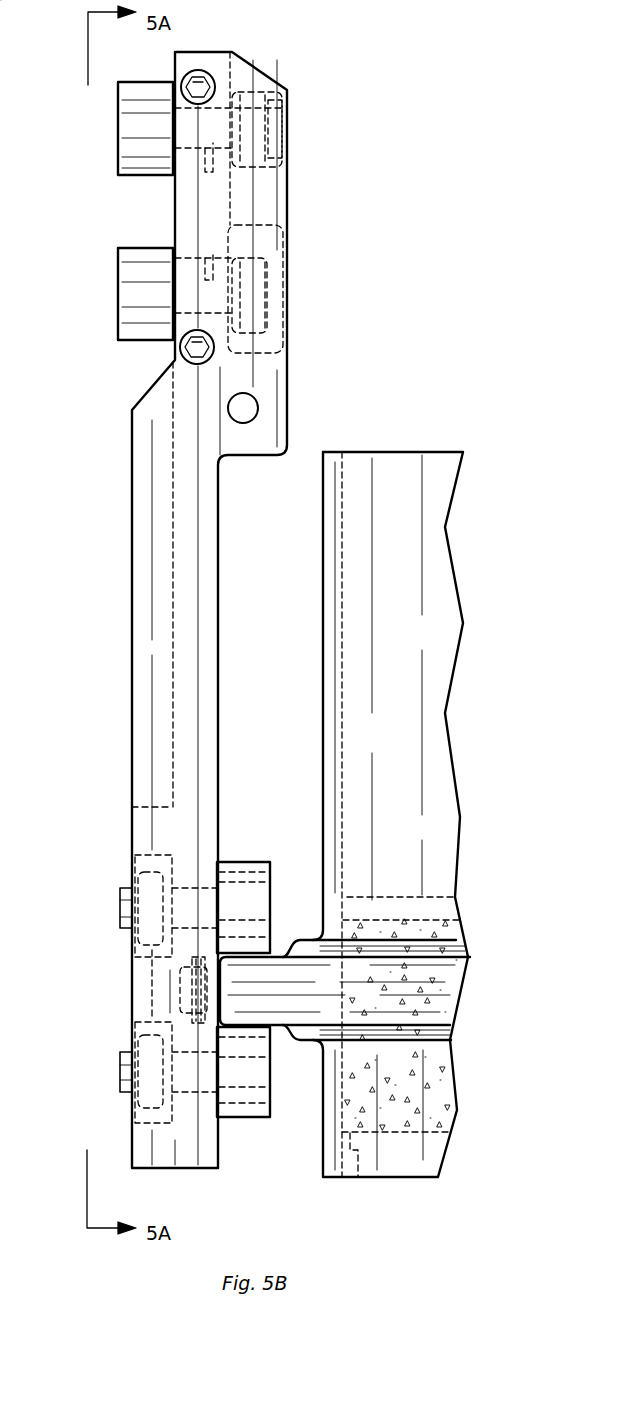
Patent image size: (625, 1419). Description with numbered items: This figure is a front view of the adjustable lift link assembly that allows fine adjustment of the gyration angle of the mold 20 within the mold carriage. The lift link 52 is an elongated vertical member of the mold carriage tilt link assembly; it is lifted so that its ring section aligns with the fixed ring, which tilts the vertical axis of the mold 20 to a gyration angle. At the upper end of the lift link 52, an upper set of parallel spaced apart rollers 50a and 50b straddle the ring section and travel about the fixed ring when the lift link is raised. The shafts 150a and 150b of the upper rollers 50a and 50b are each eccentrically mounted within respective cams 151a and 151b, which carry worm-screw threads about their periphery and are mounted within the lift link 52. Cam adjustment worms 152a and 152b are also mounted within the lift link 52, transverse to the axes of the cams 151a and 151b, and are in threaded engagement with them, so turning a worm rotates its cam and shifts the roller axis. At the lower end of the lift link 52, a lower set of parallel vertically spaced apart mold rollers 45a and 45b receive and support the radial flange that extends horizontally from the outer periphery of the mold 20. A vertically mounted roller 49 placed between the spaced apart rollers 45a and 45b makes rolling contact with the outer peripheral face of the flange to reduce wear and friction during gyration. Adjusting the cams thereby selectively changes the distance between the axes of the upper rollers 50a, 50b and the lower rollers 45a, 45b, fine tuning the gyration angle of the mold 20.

The mold 20 is at (363, 448).
The lift link 52 is at (292, 332).
The upper roller 50a is at (150, 112).
The upper roller 50b is at (130, 298).
The cam 151a is at (190, 176).
The cam 151b is at (188, 258).
The shaft 150a is at (212, 155).
The shaft 150b is at (212, 290).
The cam adjustment worm 152a is at (200, 78).
The cam adjustment worm 152b is at (190, 356).
The mold roller 45a is at (238, 893).
The mold roller 45b is at (246, 1075).
The vertically mounted roller 49 is at (178, 990).